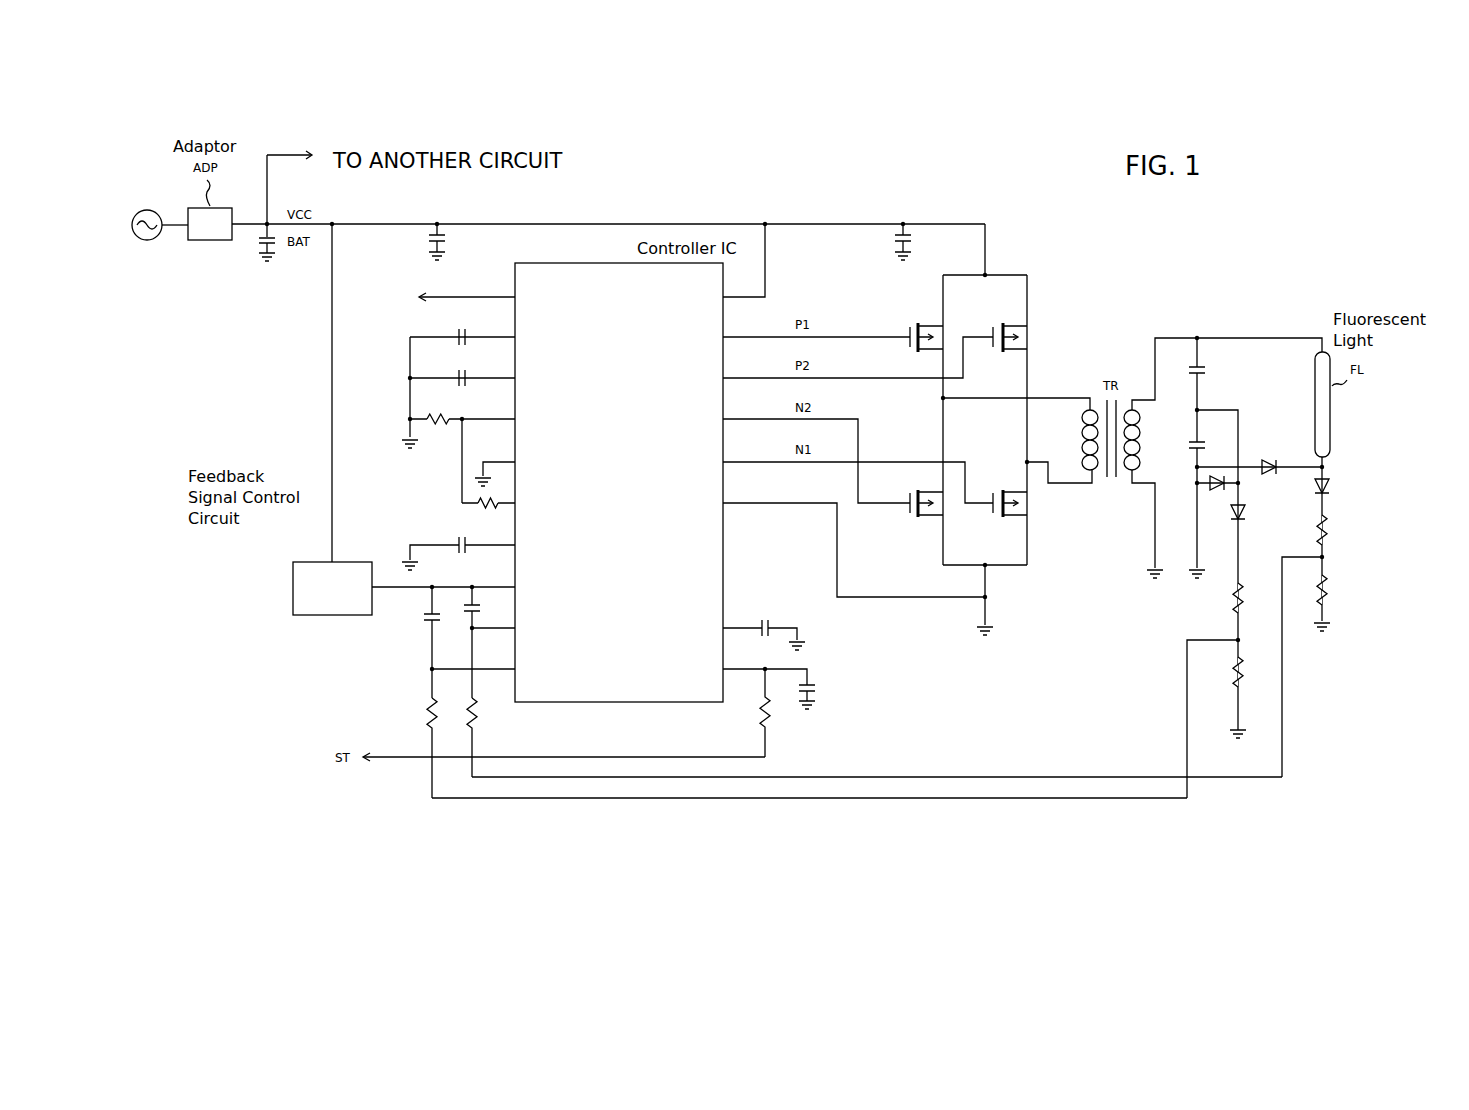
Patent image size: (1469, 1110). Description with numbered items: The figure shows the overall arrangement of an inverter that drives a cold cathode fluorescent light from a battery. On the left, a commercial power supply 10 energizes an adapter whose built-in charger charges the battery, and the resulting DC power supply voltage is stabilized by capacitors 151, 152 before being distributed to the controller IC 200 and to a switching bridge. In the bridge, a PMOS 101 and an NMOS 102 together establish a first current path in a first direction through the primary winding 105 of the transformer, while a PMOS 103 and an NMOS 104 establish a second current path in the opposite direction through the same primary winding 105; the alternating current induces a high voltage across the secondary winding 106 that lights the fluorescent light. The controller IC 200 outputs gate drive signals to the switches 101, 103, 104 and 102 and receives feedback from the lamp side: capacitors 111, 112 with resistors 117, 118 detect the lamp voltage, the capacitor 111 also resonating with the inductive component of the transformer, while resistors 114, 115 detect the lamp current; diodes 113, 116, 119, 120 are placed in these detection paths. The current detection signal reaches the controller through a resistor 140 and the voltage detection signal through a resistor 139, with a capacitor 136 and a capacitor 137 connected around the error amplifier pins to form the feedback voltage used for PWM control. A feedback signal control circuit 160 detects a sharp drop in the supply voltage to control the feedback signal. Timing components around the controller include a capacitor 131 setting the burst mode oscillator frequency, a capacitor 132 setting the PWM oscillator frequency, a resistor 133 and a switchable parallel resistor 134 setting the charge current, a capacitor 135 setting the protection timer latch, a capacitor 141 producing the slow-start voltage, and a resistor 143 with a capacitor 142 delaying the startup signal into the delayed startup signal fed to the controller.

The commercial power supply 10 is at (143, 207).
The controller IC 200 is at (600, 263).
The feedback signal control circuit 160 is at (298, 553).
The PMOS (first switch) 101 is at (925, 324).
The NMOS (second switch) 102 is at (1010, 517).
The PMOS (third switch) 103 is at (1010, 324).
The NMOS (fourth switch) 104 is at (926, 517).
The primary winding 105 is at (1074, 440).
The secondary winding 106 is at (1144, 440).
The capacitor 111 is at (1211, 373).
The capacitor 112 is at (1207, 437).
The diode 113 is at (1335, 488).
The resistor 114 is at (1336, 530).
The resistor 115 is at (1336, 590).
The diode 116 is at (1252, 515).
The resistor 117 is at (1253, 598).
The resistor 118 is at (1253, 672).
The diode 119 is at (1268, 458).
The diode 120 is at (1212, 491).
The capacitor 131 is at (462, 328).
The capacitor 132 is at (462, 369).
The resistor 133 is at (436, 411).
The resistor 134 is at (492, 514).
The capacitor 135 is at (459, 534).
The capacitor 136 is at (484, 642).
The capacitor 137 is at (416, 642).
The resistor 139 is at (445, 748).
The resistor 140 is at (487, 737).
The capacitor 141 is at (763, 617).
The capacitor 142 is at (821, 696).
The resistor 143 is at (750, 713).
The capacitor 151 is at (451, 241).
The capacitor 152 is at (917, 241).